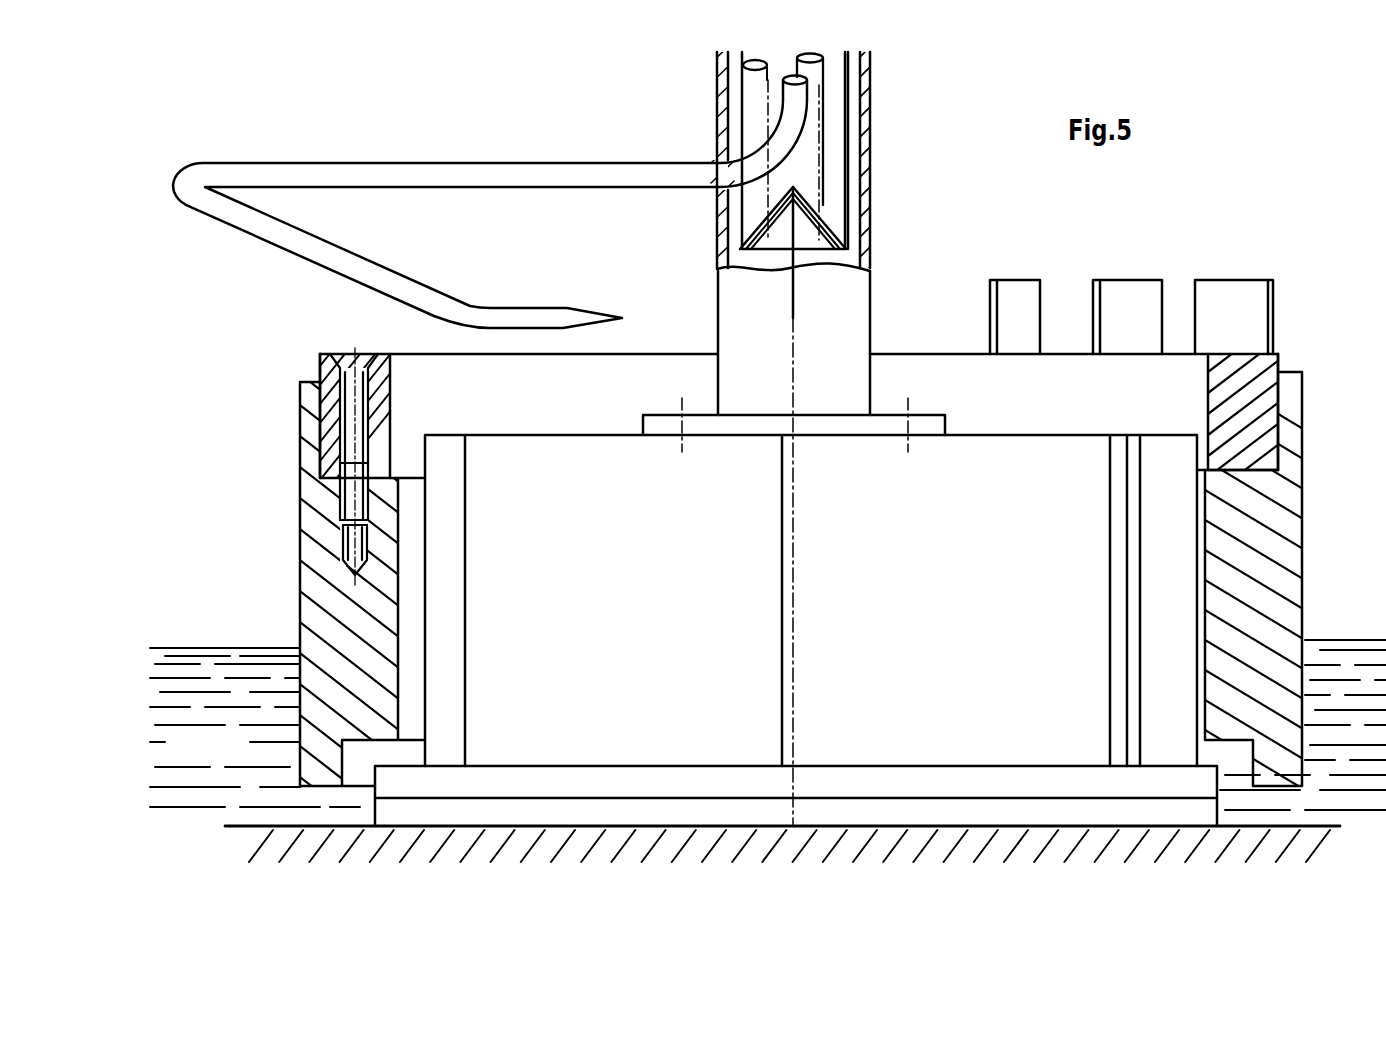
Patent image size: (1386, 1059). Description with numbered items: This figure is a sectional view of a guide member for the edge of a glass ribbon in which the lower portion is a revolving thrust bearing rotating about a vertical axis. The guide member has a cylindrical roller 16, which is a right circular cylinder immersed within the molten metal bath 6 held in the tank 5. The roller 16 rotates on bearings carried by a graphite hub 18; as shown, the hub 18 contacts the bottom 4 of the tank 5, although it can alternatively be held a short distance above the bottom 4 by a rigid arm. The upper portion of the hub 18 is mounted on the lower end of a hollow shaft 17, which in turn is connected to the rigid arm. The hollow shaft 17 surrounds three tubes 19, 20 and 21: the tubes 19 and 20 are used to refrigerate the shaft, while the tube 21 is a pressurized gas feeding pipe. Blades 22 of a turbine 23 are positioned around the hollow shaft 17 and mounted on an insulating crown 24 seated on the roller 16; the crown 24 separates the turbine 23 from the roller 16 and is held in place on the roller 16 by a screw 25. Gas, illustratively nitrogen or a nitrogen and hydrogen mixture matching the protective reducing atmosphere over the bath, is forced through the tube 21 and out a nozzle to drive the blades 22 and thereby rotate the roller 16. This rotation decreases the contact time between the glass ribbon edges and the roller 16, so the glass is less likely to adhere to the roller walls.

The bottom 4 is at (1296, 826).
The tank 5 is at (1310, 838).
The molten metal bath 6 is at (226, 742).
The cylindrical roller 16 is at (300, 566).
The hollow shaft 17 is at (871, 302).
The graphite hub 18 is at (988, 500).
The tube 19 is at (755, 88).
The tube 20 is at (838, 103).
The pressurized gas feeding pipe 21 is at (522, 162).
The blades 22 is at (1128, 277).
The turbine 23 is at (1258, 277).
The insulating crown 24 is at (1268, 364).
The screw 25 is at (351, 358).